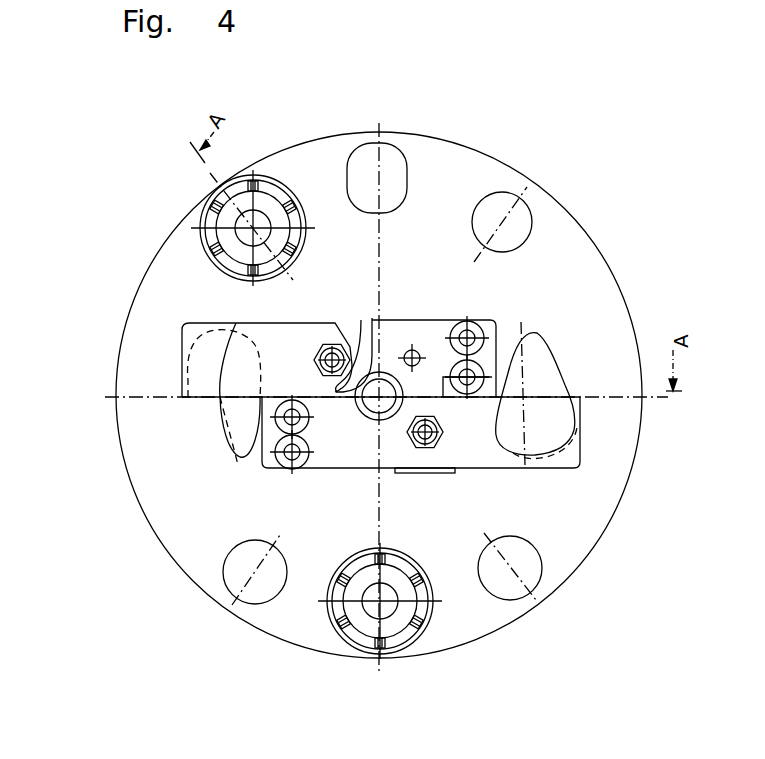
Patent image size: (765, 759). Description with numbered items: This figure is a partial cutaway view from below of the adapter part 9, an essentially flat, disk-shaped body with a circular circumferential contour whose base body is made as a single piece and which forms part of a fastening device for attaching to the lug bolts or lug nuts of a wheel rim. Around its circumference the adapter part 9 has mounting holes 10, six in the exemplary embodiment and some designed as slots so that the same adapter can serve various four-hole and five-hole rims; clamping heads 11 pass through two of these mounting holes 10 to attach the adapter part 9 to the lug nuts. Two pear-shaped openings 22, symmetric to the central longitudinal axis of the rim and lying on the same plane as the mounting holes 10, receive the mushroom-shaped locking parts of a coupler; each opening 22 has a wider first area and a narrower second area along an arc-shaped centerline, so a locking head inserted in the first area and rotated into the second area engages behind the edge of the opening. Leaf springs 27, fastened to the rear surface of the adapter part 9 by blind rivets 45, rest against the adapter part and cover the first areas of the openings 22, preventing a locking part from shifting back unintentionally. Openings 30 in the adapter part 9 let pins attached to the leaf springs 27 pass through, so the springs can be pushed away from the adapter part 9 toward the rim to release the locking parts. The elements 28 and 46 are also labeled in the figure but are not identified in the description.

The adapter part 9 is at (614, 307).
The mounting holes 10 is at (518, 217).
The clamping heads 11 is at (456, 611).
The pear-shaped openings 22 is at (217, 422).
The leaf springs 27 is at (217, 336).
The plate 28 is at (182, 401).
The openings 30 is at (352, 332).
The blind rivets 45 is at (280, 452).
The pin 46 is at (538, 372).